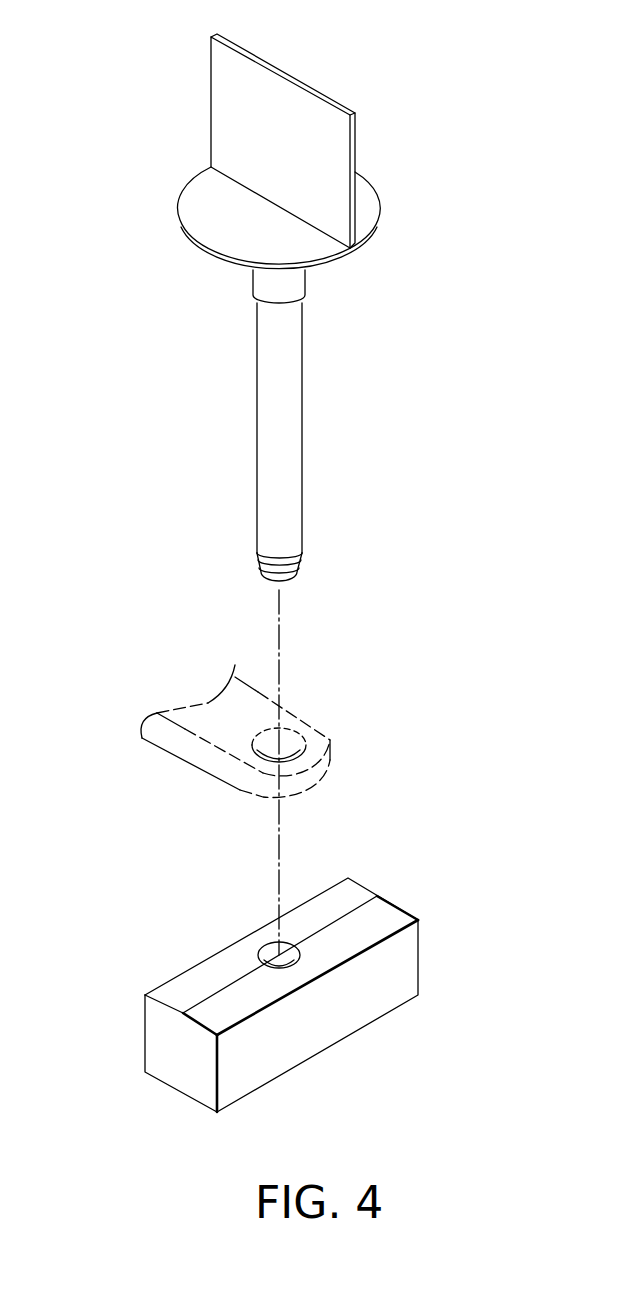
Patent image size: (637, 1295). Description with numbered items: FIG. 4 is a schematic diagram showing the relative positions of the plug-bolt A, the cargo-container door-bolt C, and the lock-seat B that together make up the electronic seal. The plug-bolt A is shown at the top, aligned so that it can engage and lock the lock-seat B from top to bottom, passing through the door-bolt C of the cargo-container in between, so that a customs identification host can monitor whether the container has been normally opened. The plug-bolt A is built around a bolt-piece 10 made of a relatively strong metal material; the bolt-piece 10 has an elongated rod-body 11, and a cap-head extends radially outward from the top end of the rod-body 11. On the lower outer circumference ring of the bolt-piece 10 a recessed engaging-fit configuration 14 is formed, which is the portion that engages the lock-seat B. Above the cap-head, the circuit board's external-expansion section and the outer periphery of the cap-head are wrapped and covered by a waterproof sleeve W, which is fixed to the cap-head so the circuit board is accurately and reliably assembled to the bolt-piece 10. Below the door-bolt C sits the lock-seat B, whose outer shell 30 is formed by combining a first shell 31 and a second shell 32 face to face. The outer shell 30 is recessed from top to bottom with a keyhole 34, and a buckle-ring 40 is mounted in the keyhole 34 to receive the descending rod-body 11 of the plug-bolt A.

The waterproof sleeve W is at (233, 102).
The plug-bolt A is at (279, 374).
The bolt-piece 10 is at (330, 360).
The rod-body 11 is at (282, 368).
The engaging-fit configuration 14 is at (293, 558).
The door-bolt C is at (303, 742).
The lock-seat B is at (258, 996).
The outer shell 30 is at (272, 996).
The first shell 31 is at (173, 990).
The second shell 32 is at (327, 1028).
The keyhole 34 is at (330, 962).
The buckle-ring 40 is at (284, 955).